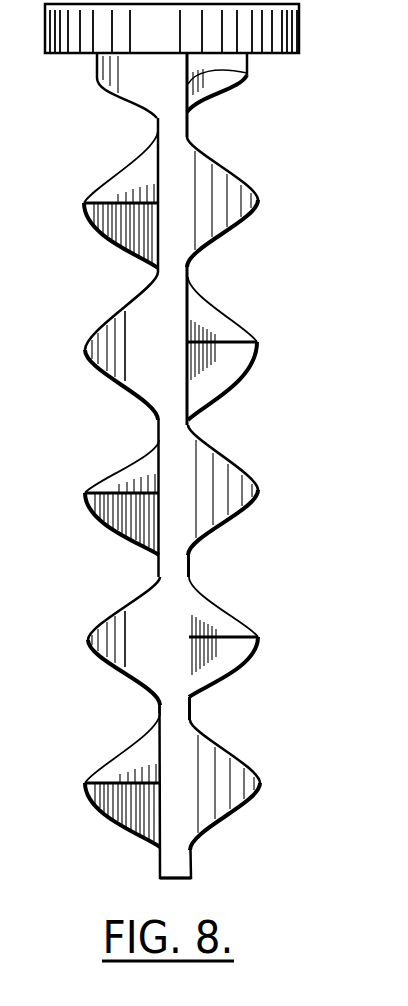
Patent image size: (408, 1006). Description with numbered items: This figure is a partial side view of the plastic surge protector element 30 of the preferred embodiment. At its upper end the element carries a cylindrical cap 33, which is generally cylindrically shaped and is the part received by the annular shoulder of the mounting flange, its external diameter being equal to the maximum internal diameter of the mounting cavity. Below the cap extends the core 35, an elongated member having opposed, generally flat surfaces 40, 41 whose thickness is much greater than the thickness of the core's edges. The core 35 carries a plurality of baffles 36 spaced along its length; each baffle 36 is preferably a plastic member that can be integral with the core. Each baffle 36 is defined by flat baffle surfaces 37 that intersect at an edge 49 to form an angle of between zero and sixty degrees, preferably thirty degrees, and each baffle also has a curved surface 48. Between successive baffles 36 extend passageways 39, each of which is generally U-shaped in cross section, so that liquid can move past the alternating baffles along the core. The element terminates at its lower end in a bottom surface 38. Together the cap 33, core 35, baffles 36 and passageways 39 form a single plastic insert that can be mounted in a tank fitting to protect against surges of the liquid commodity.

The plastic surge protector element 30 is at (190, 263).
The cylindrical cap 33 is at (301, 22).
The core 35 is at (176, 714).
The baffle 36 is at (87, 366).
The baffle surfaces 37 is at (122, 173).
The bottom surface 38 is at (162, 884).
The passageway 39 is at (207, 565).
The flat surface 40 is at (215, 386).
The flat surface 41 is at (158, 470).
The curved surface 48 is at (242, 183).
The edge 49 is at (86, 205).